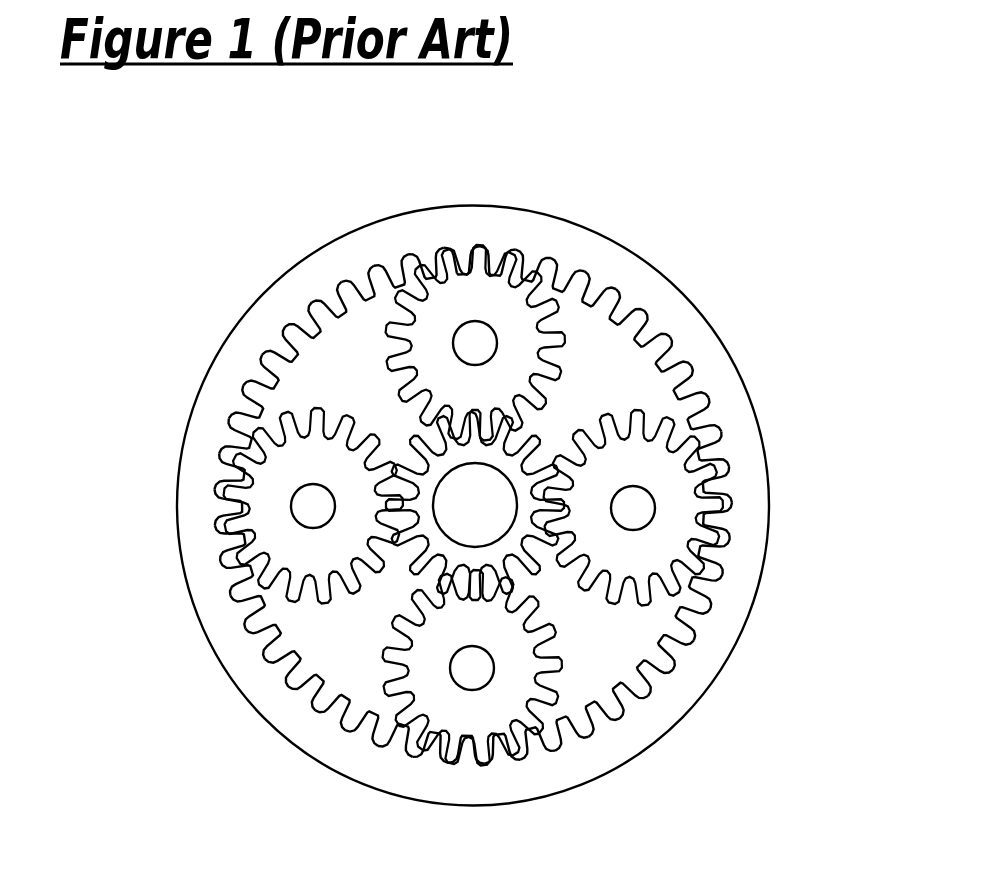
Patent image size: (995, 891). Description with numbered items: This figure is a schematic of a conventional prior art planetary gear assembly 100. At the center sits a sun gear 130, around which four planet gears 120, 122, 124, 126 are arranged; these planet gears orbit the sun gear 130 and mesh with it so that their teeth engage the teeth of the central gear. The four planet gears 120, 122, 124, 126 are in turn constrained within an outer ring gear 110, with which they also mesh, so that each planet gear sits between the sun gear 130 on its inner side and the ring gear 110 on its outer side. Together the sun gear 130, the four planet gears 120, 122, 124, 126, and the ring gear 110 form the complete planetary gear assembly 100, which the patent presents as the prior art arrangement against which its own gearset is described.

The planetary gear assembly 100 is at (208, 213).
The ring gear 110 is at (477, 202).
The planet gear 120 is at (547, 333).
The planet gear 122 is at (663, 422).
The planet gear 124 is at (558, 673).
The planet gear 126 is at (246, 592).
The sun gear 130 is at (530, 573).